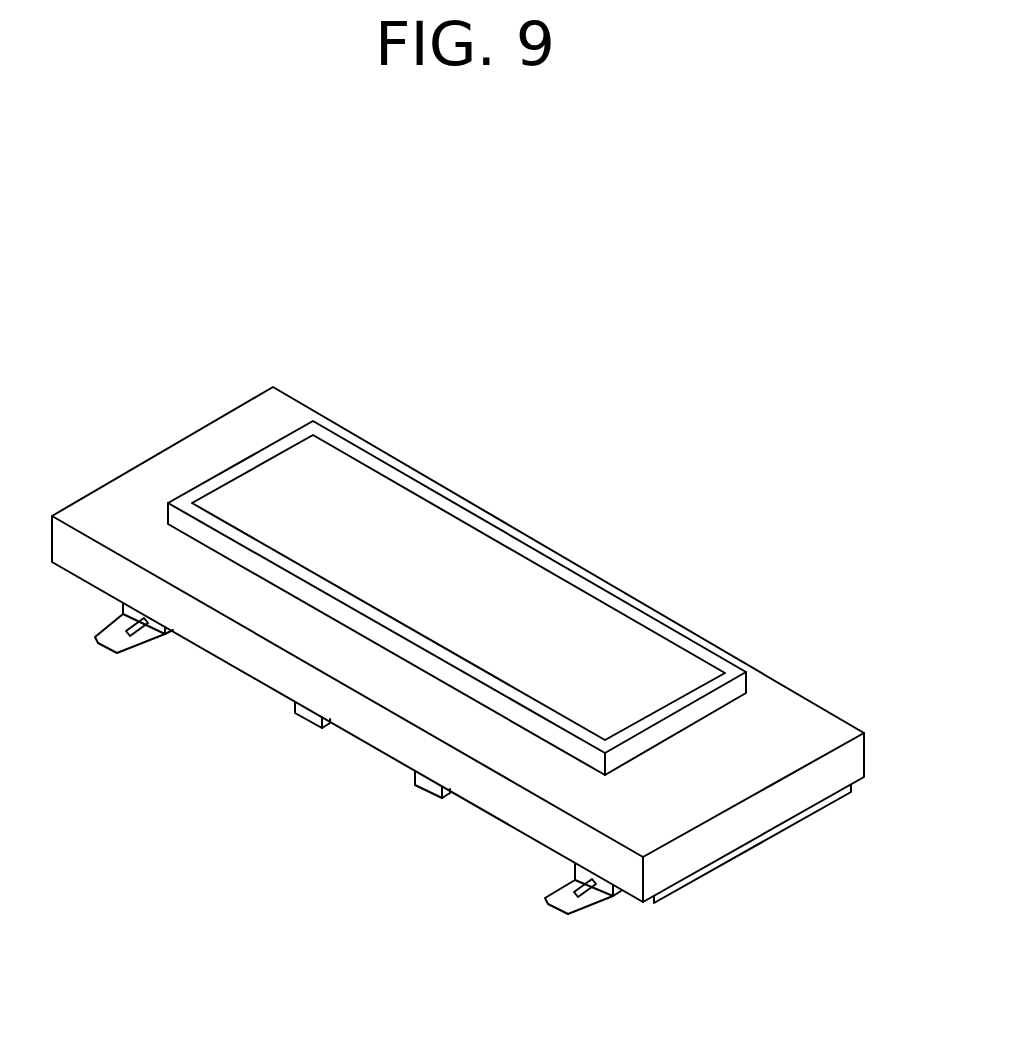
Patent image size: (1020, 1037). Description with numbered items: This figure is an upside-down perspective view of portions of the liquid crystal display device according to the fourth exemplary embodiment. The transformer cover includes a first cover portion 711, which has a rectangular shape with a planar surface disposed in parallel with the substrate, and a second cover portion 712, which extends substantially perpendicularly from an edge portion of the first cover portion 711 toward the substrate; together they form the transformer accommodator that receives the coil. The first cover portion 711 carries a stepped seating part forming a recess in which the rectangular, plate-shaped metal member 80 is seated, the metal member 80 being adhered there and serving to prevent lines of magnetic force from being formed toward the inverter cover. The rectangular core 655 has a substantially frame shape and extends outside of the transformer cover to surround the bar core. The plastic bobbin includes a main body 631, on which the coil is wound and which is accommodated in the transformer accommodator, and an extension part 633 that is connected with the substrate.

The metal member 80 is at (418, 510).
The first cover portion 711 is at (515, 543).
The second cover portion 712 is at (348, 620).
The rectangular core 655 is at (780, 705).
The main body 631 is at (428, 784).
The extension part 633 is at (613, 893).